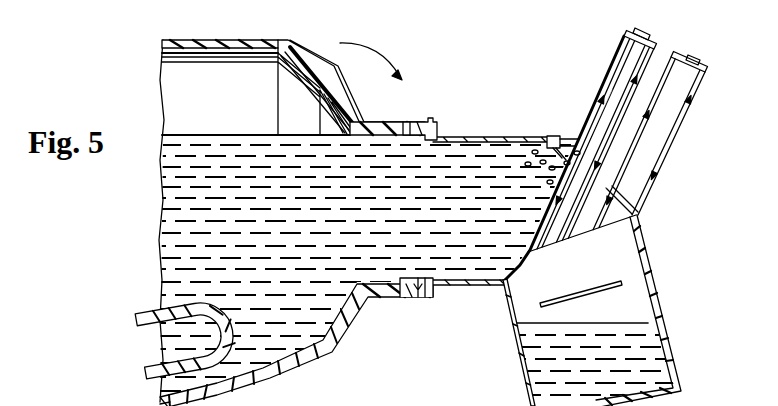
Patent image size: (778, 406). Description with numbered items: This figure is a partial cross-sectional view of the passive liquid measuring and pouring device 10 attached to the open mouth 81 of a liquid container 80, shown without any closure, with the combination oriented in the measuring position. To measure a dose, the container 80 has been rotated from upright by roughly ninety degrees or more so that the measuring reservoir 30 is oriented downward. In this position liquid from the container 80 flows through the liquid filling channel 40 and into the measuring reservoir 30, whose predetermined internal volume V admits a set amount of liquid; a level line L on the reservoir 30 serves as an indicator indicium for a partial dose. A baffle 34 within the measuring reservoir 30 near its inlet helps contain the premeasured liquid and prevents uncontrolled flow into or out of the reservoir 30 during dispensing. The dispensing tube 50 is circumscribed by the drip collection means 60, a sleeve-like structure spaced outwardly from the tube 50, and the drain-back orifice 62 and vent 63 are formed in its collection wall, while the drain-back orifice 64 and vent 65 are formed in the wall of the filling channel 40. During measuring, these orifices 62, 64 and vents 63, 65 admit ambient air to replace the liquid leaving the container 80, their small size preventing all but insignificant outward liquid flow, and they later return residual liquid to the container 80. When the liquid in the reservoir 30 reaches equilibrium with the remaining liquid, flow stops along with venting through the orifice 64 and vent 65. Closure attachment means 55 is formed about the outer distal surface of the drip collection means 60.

The passive liquid measuring and pouring device 10 is at (670, 200).
The measuring reservoir 30 is at (613, 310).
The baffle 34 is at (649, 268).
The liquid filling channel 40 is at (478, 173).
The dispensing tube 50 is at (668, 93).
The closure attachment means 55 is at (62, 405).
The drip collection means 60 is at (681, 138).
The drain-back orifice 62 is at (646, 34).
The vent 63 is at (689, 62).
The drain-back orifice 64 is at (554, 137).
The vent 65 is at (590, 108).
The liquid container 80 is at (356, 336).
The open mouth 81 is at (398, 121).
The level line L is at (541, 302).
The internal volume V is at (560, 367).